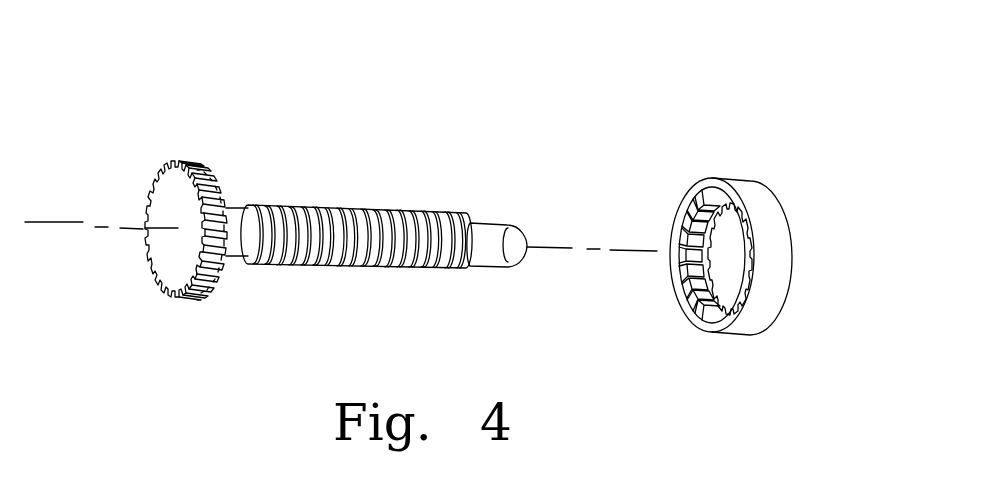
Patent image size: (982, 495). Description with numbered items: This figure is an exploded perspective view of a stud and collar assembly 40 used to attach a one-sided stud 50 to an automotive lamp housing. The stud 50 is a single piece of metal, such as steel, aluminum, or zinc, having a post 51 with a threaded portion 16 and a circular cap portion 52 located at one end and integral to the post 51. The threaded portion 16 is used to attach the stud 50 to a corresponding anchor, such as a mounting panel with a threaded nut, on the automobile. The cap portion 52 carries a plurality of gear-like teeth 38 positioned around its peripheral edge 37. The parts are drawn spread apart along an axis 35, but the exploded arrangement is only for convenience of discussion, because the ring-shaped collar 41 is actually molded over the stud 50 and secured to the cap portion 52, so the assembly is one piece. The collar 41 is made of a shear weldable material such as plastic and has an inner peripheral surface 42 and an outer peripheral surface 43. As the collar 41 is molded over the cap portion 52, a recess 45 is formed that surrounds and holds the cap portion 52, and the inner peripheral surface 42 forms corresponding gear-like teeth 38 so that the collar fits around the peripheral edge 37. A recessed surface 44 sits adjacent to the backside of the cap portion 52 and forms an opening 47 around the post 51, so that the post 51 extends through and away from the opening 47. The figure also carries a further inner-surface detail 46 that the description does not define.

The stud and collar assembly 40 is at (262, 101).
The axis 35 is at (62, 222).
The cap portion 52 is at (178, 187).
The peripheral edge 37 is at (174, 285).
The gear-like teeth 38 is at (188, 292).
The stud 50 is at (324, 198).
The threaded portion 16 is at (373, 269).
The post 51 is at (488, 222).
The collar 41 is at (768, 186).
The outer peripheral surface 43 is at (762, 313).
The inner peripheral surface 42 is at (697, 330).
The recessed surface 44 is at (686, 226).
The tooth face 46 is at (688, 198).
The recess 45 is at (687, 292).
The opening 47 is at (694, 306).